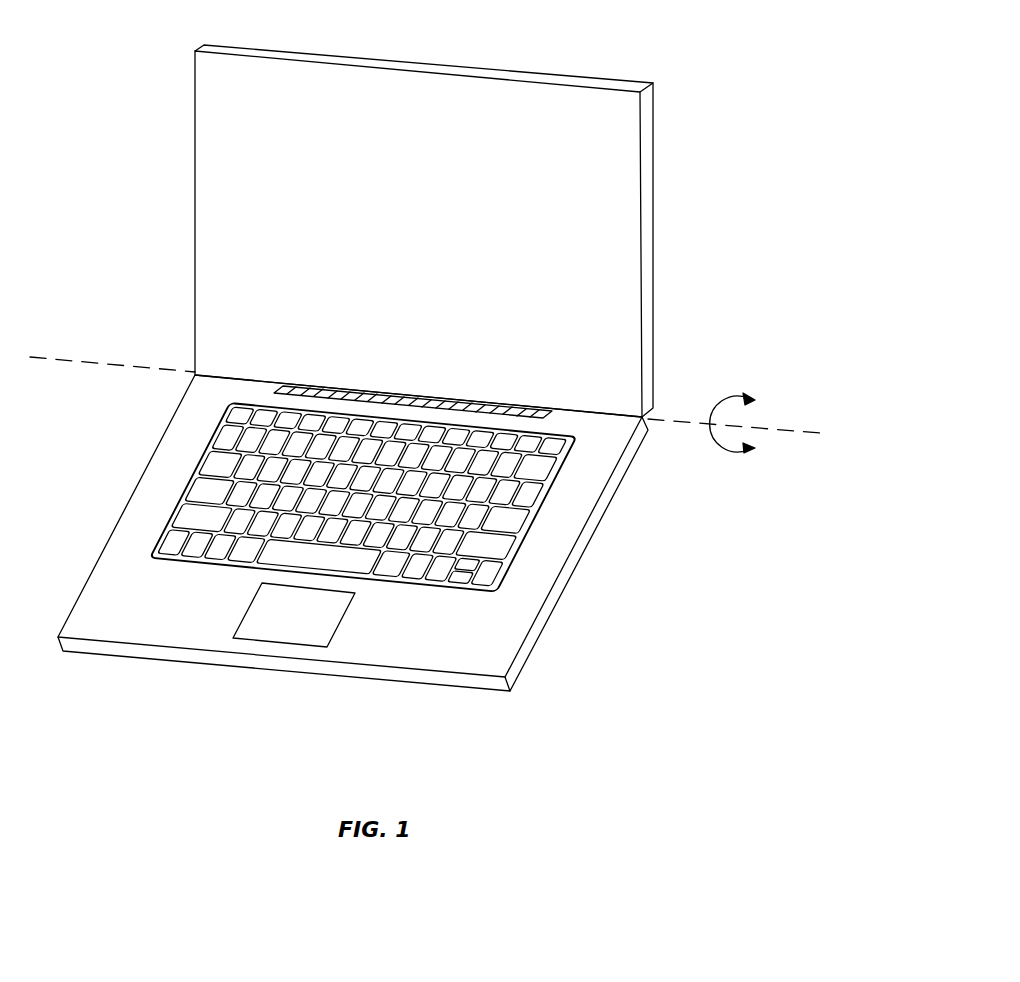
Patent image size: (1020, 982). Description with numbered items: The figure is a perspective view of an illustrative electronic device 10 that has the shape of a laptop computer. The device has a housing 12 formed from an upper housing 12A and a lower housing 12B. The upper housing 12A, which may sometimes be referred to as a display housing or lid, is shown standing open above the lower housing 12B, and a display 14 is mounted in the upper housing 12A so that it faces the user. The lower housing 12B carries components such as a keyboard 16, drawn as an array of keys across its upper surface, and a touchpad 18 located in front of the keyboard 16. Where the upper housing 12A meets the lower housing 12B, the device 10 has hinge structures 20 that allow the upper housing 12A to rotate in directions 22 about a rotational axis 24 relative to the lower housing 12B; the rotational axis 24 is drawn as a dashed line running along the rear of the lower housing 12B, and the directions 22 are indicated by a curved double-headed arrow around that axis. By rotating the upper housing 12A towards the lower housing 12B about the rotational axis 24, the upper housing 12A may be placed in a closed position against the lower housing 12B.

The electronic device 10 is at (708, 54).
The housing 12 is at (653, 350).
The upper housing 12A is at (183, 52).
The lower housing 12B is at (173, 383).
The display 14 is at (562, 222).
The keyboard 16 is at (505, 512).
The touchpad 18 is at (340, 625).
The hinge structures 20 is at (518, 400).
The directions 22 is at (722, 455).
The rotational axis 24 is at (88, 357).